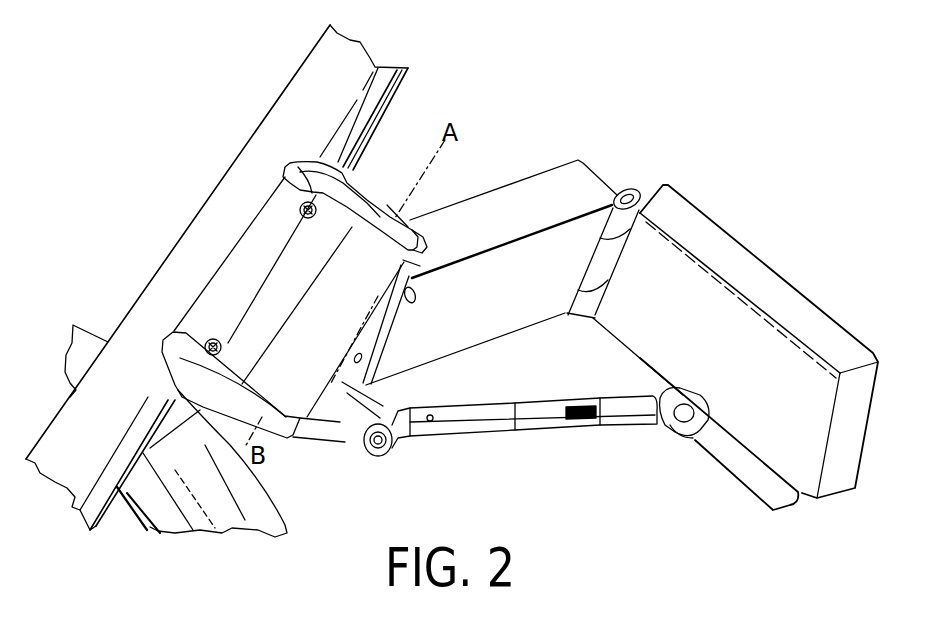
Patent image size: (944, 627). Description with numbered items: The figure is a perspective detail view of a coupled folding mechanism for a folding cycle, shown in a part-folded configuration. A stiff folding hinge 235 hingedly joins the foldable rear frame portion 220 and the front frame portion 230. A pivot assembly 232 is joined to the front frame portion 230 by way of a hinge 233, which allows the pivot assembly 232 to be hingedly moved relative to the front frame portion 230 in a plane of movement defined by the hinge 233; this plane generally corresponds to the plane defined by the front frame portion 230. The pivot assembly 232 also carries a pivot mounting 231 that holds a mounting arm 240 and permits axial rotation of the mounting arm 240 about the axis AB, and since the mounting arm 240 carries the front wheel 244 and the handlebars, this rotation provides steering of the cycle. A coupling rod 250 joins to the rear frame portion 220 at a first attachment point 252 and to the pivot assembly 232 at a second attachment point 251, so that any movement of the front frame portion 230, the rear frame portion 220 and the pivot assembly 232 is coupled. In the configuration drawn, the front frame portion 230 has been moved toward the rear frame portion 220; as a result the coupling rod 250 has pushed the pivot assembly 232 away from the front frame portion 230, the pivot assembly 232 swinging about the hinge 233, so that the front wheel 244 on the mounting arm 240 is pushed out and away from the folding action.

The rear frame portion 220 is at (700, 217).
The front frame portion 230 is at (512, 267).
The pivot mounting 231 is at (367, 183).
The pivot assembly 232 is at (337, 423).
The hinge 233 is at (416, 302).
The stiff folding hinge 235 is at (628, 190).
The mounting arm 240 is at (283, 97).
The front wheel 244 is at (250, 530).
The coupling rod 250 is at (500, 430).
The second attachment point 251 is at (385, 456).
The first attachment point 252 is at (675, 440).